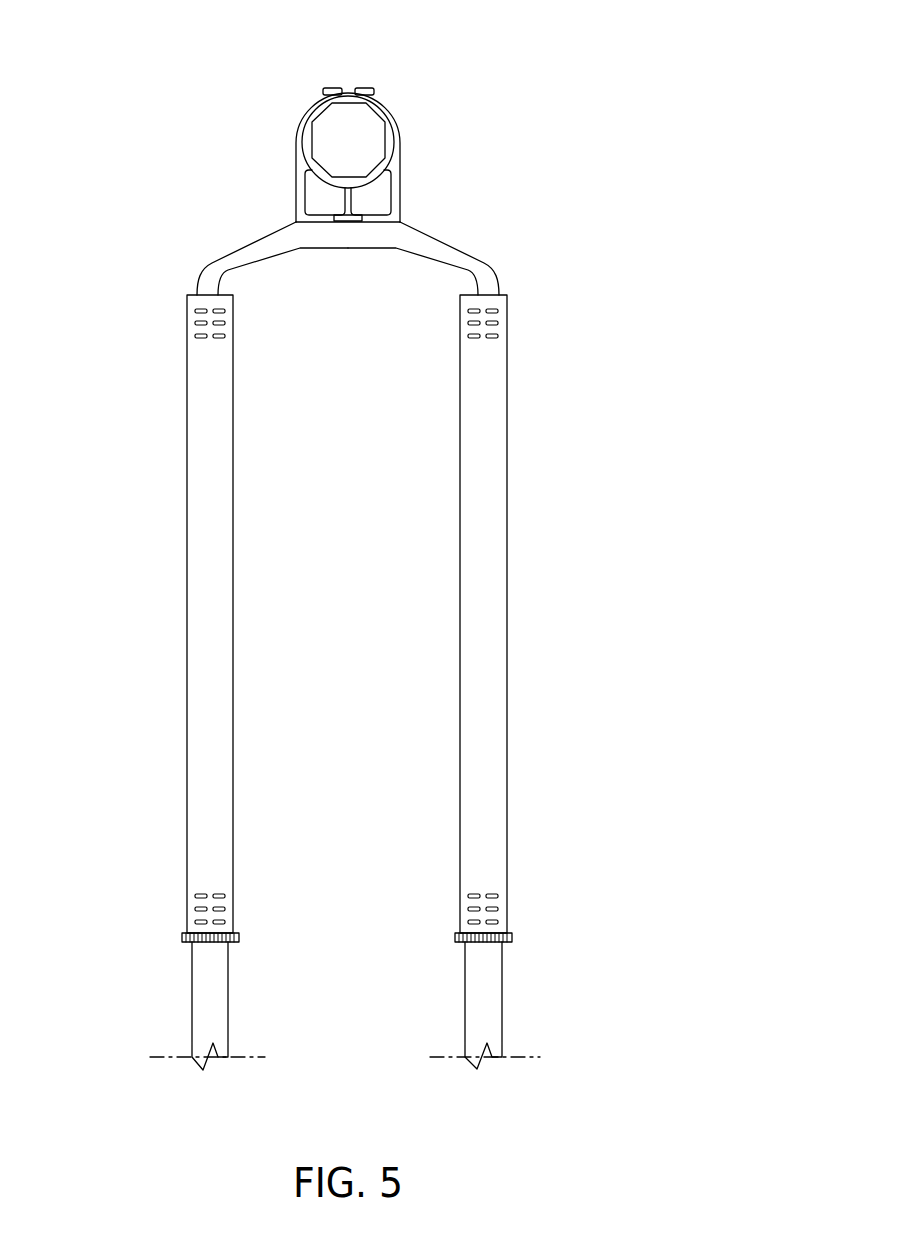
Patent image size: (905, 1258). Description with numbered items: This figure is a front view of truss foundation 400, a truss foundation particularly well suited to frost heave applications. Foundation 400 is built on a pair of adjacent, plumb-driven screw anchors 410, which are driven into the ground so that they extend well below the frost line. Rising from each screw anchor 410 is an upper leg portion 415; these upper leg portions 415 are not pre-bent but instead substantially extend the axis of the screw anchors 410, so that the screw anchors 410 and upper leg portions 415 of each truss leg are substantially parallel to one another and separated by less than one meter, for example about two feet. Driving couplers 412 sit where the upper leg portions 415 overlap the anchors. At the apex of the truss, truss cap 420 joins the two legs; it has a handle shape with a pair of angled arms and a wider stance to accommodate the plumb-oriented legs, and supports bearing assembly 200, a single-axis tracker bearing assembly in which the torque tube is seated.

The bearing assembly 200 is at (460, 68).
The truss foundation 400 is at (172, 267).
The truss cap 420 is at (495, 258).
The upper leg portions 415 is at (497, 612).
The driving couplers 412 is at (513, 937).
The screw anchors 410 is at (503, 1000).